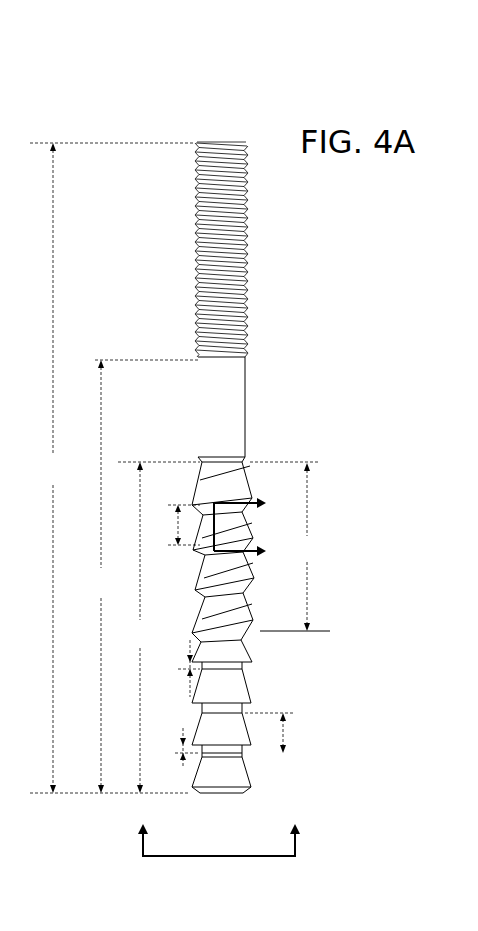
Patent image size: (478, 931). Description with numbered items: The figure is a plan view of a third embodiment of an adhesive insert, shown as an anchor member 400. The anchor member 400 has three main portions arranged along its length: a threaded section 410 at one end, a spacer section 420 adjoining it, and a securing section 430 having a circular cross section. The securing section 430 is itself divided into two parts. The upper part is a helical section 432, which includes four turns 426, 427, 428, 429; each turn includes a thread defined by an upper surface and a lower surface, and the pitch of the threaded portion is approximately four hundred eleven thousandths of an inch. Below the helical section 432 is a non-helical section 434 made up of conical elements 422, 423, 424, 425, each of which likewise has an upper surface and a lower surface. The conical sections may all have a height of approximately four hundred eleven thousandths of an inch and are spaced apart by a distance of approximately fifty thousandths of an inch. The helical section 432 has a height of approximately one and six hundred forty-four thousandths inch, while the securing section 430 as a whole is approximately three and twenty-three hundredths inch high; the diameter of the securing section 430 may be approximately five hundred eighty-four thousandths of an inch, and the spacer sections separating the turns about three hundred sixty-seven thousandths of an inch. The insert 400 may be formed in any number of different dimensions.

The anchor member 400 is at (226, 115).
The threaded section 410 is at (253, 252).
The spacer section 420 is at (237, 388).
The conical element 422 is at (243, 782).
The conical element 423 is at (237, 733).
The conical element 424 is at (238, 695).
The conical element 425 is at (234, 648).
The turn 426 is at (223, 605).
The turn 427 is at (232, 566).
The turn 428 is at (207, 540).
The turn 429 is at (232, 470).
The securing section 430 is at (354, 590).
The helical section 432 is at (280, 520).
The non-helical section 434 is at (334, 717).